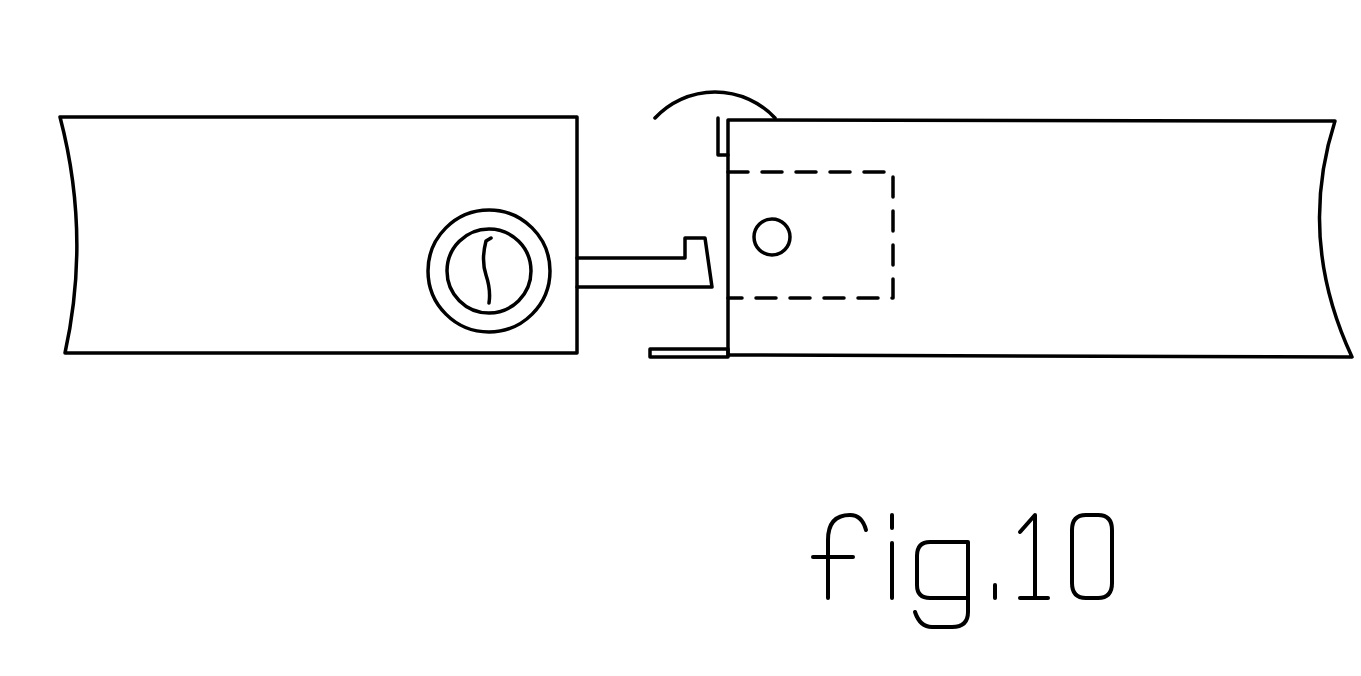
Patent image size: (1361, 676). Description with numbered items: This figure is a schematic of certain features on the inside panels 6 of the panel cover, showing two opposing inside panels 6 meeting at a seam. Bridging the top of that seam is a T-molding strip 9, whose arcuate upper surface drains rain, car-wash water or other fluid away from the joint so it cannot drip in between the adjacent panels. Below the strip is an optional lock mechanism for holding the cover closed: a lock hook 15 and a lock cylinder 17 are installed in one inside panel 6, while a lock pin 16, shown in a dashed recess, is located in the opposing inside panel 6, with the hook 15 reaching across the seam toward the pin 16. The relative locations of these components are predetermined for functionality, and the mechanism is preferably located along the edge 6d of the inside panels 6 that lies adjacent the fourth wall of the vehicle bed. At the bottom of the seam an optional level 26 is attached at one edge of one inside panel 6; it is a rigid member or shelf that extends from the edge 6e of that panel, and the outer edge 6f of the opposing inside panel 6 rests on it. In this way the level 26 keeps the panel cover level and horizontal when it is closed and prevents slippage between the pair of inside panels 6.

The inside panel 6 is at (458, 147).
The edge of inside panel 6d is at (651, 237).
The edge of inside panel 6e is at (730, 318).
The outer edge of opposing inside panel 6f is at (578, 328).
The T-molding strip 9 is at (720, 108).
The lock hook 15 is at (638, 271).
The lock pin 16 is at (779, 229).
The lock cylinder 17 is at (472, 293).
The level 26 is at (667, 354).